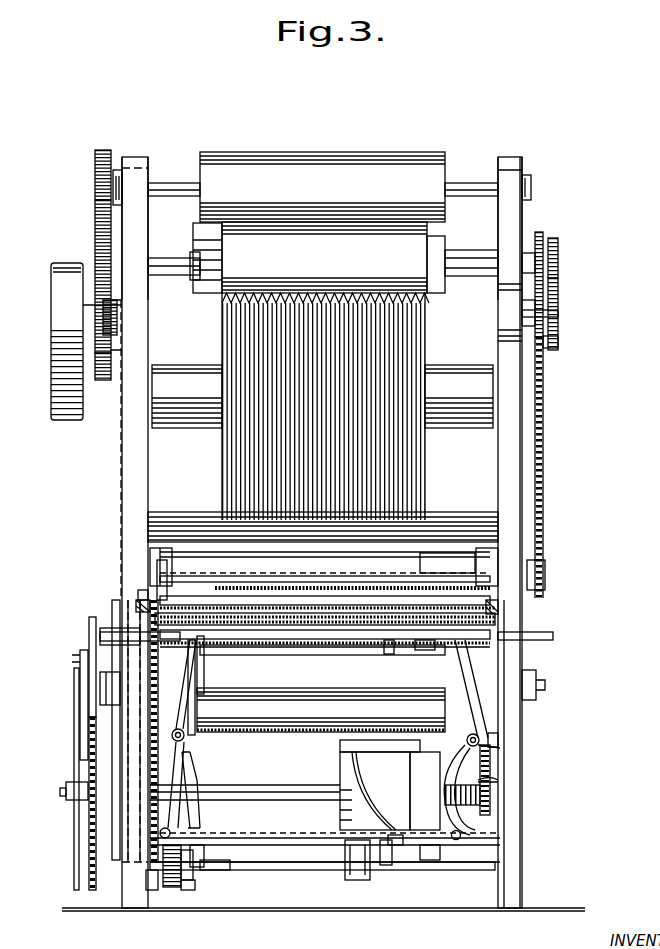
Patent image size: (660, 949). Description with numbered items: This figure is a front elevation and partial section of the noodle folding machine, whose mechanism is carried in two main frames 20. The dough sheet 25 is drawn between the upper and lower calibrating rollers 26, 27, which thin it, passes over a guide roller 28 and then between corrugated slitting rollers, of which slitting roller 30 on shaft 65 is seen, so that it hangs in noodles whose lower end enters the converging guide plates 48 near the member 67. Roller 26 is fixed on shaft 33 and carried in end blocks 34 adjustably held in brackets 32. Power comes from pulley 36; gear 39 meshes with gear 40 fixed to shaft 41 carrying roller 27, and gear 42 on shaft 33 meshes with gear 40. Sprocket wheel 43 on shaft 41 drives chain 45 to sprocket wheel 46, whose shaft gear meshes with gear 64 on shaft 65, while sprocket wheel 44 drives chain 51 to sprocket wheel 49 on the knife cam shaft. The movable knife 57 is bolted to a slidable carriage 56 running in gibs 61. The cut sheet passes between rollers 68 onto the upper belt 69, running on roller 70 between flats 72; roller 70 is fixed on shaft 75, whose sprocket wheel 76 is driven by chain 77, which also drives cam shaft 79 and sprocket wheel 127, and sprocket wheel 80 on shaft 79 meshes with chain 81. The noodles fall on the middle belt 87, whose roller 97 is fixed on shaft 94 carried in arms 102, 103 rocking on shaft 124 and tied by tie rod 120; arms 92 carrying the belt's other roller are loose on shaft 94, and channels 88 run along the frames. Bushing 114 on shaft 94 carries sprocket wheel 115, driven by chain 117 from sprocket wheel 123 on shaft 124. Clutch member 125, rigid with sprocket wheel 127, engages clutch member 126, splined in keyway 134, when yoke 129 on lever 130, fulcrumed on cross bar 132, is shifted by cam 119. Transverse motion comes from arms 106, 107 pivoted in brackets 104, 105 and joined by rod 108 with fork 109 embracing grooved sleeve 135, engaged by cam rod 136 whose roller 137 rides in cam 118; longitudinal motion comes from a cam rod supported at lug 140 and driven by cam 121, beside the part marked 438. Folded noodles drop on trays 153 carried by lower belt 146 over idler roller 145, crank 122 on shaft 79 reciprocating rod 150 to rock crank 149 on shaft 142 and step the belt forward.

The main frames 20 is at (122, 477).
The dough sheet 25 is at (222, 480).
The upper calibrating roller 26 is at (427, 152).
The lower calibrating roller 27 is at (437, 241).
The guide roller 28 is at (452, 274).
The slitting roller 30 is at (428, 334).
The brackets 32 is at (138, 218).
The shaft 33 is at (458, 185).
The end blocks 34 is at (150, 183).
The pulley 36 is at (51, 393).
The gear 39 is at (108, 379).
The gear 40 is at (95, 237).
The shaft 41 is at (160, 262).
The gear 42 is at (95, 164).
The sprocket wheel 43 is at (558, 251).
The sprocket wheel 44 is at (545, 236).
The chain 45 is at (558, 293).
The sprocket wheel 46 is at (558, 347).
The converging guide plates 48 is at (152, 517).
The sprocket wheel 49 is at (545, 584).
The chain 51 is at (543, 397).
The slidable carriage 56 is at (440, 561).
The movable knife 57 is at (425, 576).
The gibs 61 is at (150, 563).
The gear 64 is at (70, 305).
The shaft 65 is at (543, 316).
The roller surface 67 is at (222, 502).
The rollers 68 is at (390, 605).
The upper endless belt 69 is at (338, 586).
The roller 70 is at (186, 596).
The flats 72 is at (136, 607).
The shaft 75 is at (206, 602).
The sprocket wheel 76 is at (138, 595).
The chain 77 is at (150, 681).
The cam shaft 79 is at (234, 796).
The sprocket wheel 80 is at (460, 840).
The chain 81 is at (490, 763).
The middle endless belt 87 is at (250, 655).
The channels 88 is at (530, 670).
The arms 92 is at (204, 650).
The shaft 94 is at (553, 637).
The roller 97 is at (428, 650).
The arm 102 is at (510, 746).
The arm 103 is at (128, 821).
The bracket 104 is at (490, 746).
The bracket 105 is at (188, 746).
The arm 106 is at (466, 748).
The arm 107 is at (185, 758).
The rod 108 is at (262, 833).
The fork 109 is at (345, 846).
The bushing 114 is at (105, 628).
The sprocket wheel 115 is at (89, 621).
The chain 117 is at (96, 737).
The cam 118 is at (340, 756).
The cam 119 is at (195, 777).
The tie rod 120 is at (157, 582).
The cam 121 is at (422, 753).
The crank 122 is at (84, 800).
The sprocket wheel 123 is at (89, 889).
The shaft 124 is at (270, 871).
The clutch member 125 is at (172, 889).
The clutch member 126 is at (184, 894).
The sprocket wheel 127 is at (158, 891).
The yoke 129 is at (190, 911).
The lever 130 is at (204, 853).
The cross bar 132 is at (436, 849).
The keyway 134 is at (224, 871).
The grooved sleeve 135 is at (350, 881).
The cam rod 136 is at (386, 866).
The roller 137 is at (398, 846).
The lug 140 is at (498, 781).
The shaft 142 is at (195, 682).
The idler roller 145 is at (348, 739).
The lower endless belt 146 is at (278, 683).
The crank 149 is at (80, 659).
The rod 150 is at (79, 726).
The trays 153 is at (390, 654).
The gear 438 is at (460, 801).